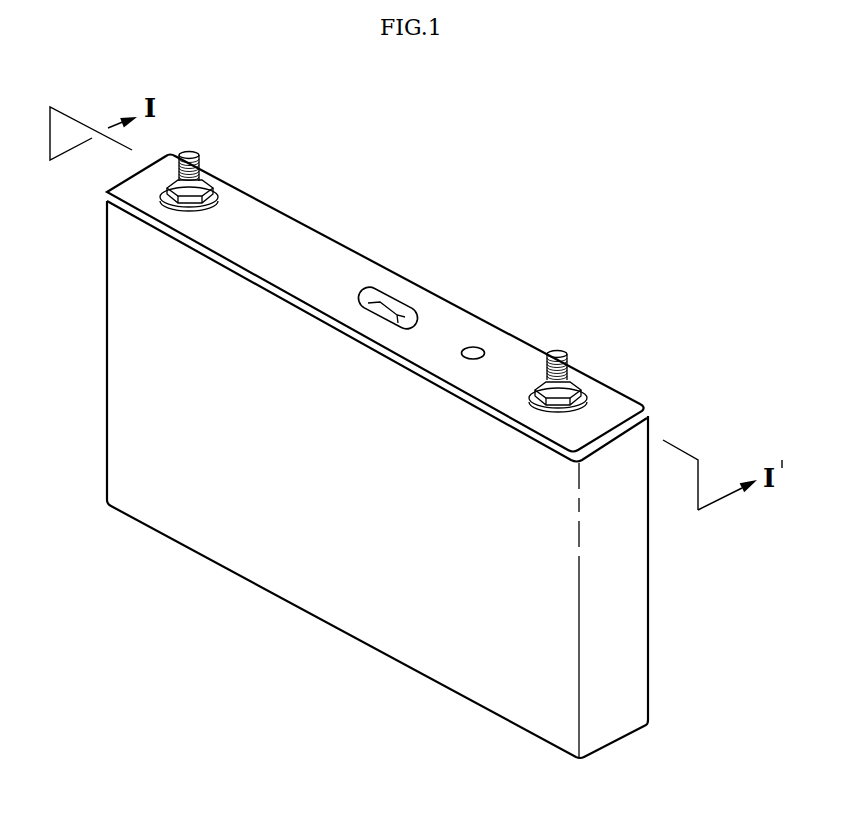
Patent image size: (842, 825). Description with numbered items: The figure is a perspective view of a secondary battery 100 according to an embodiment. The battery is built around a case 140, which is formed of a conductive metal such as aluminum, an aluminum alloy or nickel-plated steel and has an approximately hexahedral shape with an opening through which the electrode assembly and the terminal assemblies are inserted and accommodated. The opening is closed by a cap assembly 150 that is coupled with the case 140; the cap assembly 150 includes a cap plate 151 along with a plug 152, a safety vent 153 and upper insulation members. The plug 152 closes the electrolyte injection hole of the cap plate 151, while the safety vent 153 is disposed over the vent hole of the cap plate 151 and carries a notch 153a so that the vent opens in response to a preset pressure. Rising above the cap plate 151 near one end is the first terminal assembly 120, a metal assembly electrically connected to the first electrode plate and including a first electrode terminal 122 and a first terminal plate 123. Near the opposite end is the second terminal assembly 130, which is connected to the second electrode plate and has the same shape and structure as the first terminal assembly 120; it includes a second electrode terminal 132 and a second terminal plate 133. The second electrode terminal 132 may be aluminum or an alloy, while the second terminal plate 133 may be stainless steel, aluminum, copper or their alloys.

The secondary battery 100 is at (583, 121).
The first terminal assembly 120 is at (236, 140).
The first electrode terminal 122 is at (201, 148).
The first terminal plate 123 is at (215, 185).
The second terminal assembly 130 is at (606, 342).
The second electrode terminal 132 is at (571, 348).
The second terminal plate 133 is at (583, 385).
The case 140 is at (323, 603).
The cap assembly 150 is at (395, 260).
The cap plate 151 is at (298, 232).
The plug 152 is at (473, 351).
The safety vent 153 is at (420, 265).
The notch 153a is at (397, 308).